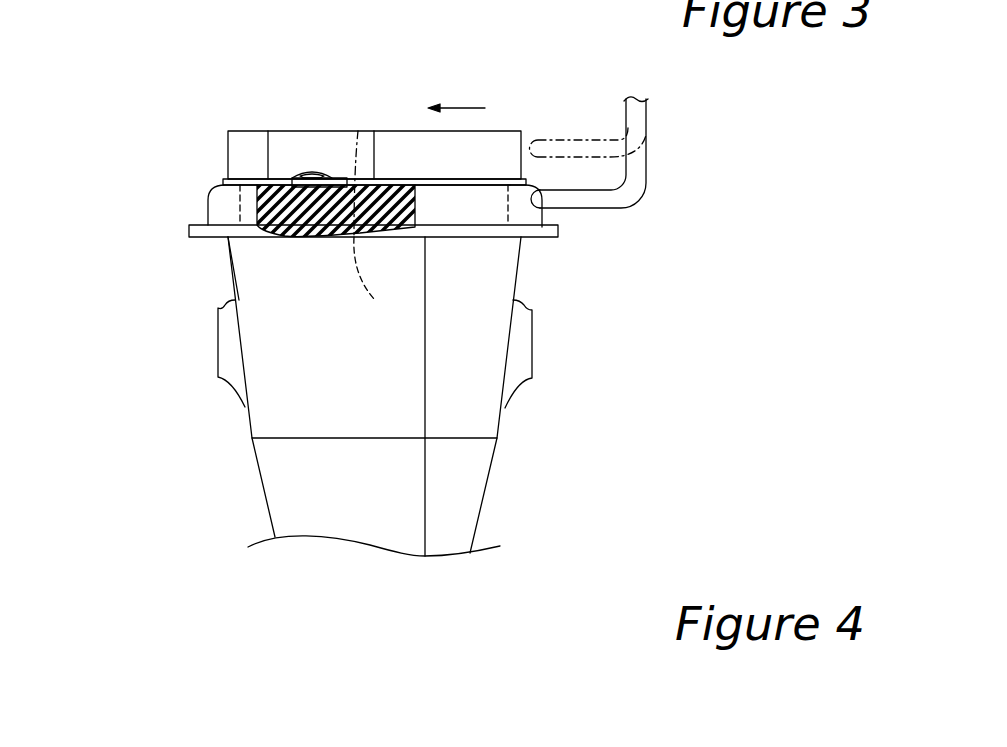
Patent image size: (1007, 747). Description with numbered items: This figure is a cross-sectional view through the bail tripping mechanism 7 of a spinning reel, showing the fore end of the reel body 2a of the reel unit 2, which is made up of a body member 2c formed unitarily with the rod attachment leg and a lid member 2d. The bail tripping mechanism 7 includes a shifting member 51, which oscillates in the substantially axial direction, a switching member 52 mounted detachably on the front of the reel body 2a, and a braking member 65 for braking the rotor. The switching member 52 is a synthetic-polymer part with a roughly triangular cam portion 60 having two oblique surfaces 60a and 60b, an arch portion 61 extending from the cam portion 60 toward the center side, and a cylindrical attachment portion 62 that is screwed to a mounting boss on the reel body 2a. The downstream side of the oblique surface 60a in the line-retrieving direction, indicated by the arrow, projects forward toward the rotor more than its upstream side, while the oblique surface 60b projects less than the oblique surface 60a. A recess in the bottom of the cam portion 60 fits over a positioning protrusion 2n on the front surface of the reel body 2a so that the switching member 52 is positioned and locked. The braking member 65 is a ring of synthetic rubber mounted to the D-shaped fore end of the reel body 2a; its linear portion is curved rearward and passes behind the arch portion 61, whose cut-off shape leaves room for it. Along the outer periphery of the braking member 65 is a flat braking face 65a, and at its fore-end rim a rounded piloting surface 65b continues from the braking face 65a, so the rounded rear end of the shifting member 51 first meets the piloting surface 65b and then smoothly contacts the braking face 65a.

The reel unit 2 is at (572, 337).
The reel body 2a is at (184, 337).
The body member 2c is at (240, 407).
The lid member 2d is at (502, 413).
The positioning protrusion 2n is at (374, 287).
The bail tripping mechanism 7 is at (583, 114).
The shifting member 51 is at (358, 131).
The switching member 52 is at (315, 172).
The cam portion 60 is at (226, 150).
The oblique surface 60a is at (377, 186).
The oblique surface 60b is at (300, 176).
The arch portion 61 is at (337, 185).
The attachment portion 62 is at (266, 131).
The braking member 65 is at (226, 200).
The braking face 65a is at (212, 212).
The piloting surface 65b is at (210, 195).